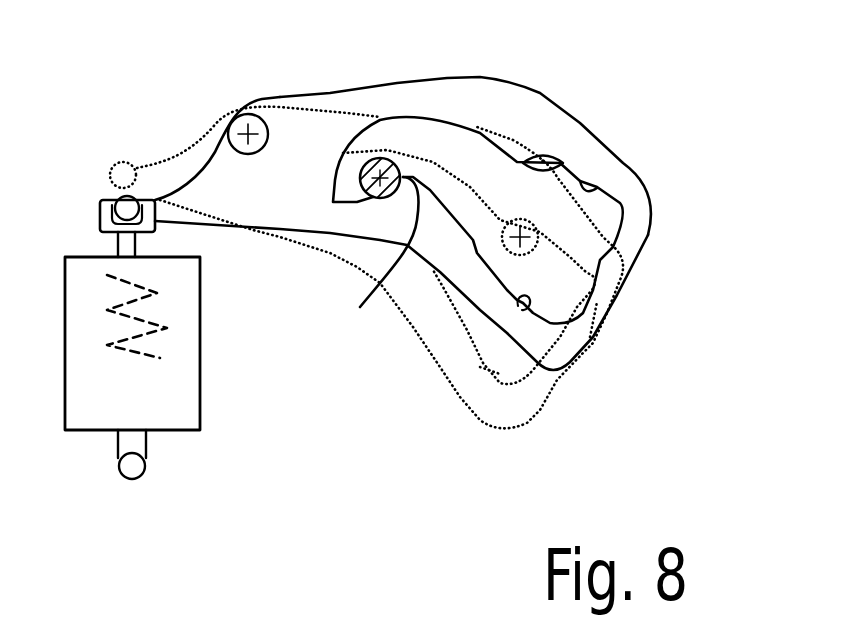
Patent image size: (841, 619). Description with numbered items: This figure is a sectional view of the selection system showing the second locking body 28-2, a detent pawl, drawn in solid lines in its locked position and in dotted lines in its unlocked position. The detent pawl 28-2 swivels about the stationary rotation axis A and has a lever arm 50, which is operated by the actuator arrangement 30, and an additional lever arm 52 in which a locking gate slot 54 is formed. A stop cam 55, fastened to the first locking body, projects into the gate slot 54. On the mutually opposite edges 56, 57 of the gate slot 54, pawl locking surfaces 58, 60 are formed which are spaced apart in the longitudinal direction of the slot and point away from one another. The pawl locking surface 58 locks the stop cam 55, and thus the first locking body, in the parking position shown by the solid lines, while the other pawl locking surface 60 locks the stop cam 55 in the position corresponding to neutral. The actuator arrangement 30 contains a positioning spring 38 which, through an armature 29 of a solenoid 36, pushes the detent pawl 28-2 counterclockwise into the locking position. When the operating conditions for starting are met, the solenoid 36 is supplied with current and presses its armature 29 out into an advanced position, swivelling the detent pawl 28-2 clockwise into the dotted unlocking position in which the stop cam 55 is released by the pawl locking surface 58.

The rotation axis A is at (248, 133).
The lever arm 50 is at (207, 178).
The additional lever arm 52 is at (540, 90).
The second locking body 28-2 is at (448, 90).
The locking gate slot 54 is at (603, 217).
The pawl locking surface 60 is at (560, 163).
The edge 57 is at (597, 184).
The stop cam 55 is at (373, 166).
The pawl locking surface 58 is at (380, 265).
The edge 56 is at (527, 312).
The armature 29 is at (118, 245).
The actuator arrangement 30 is at (172, 368).
The solenoid 36 is at (190, 367).
The positioning spring 38 is at (157, 330).